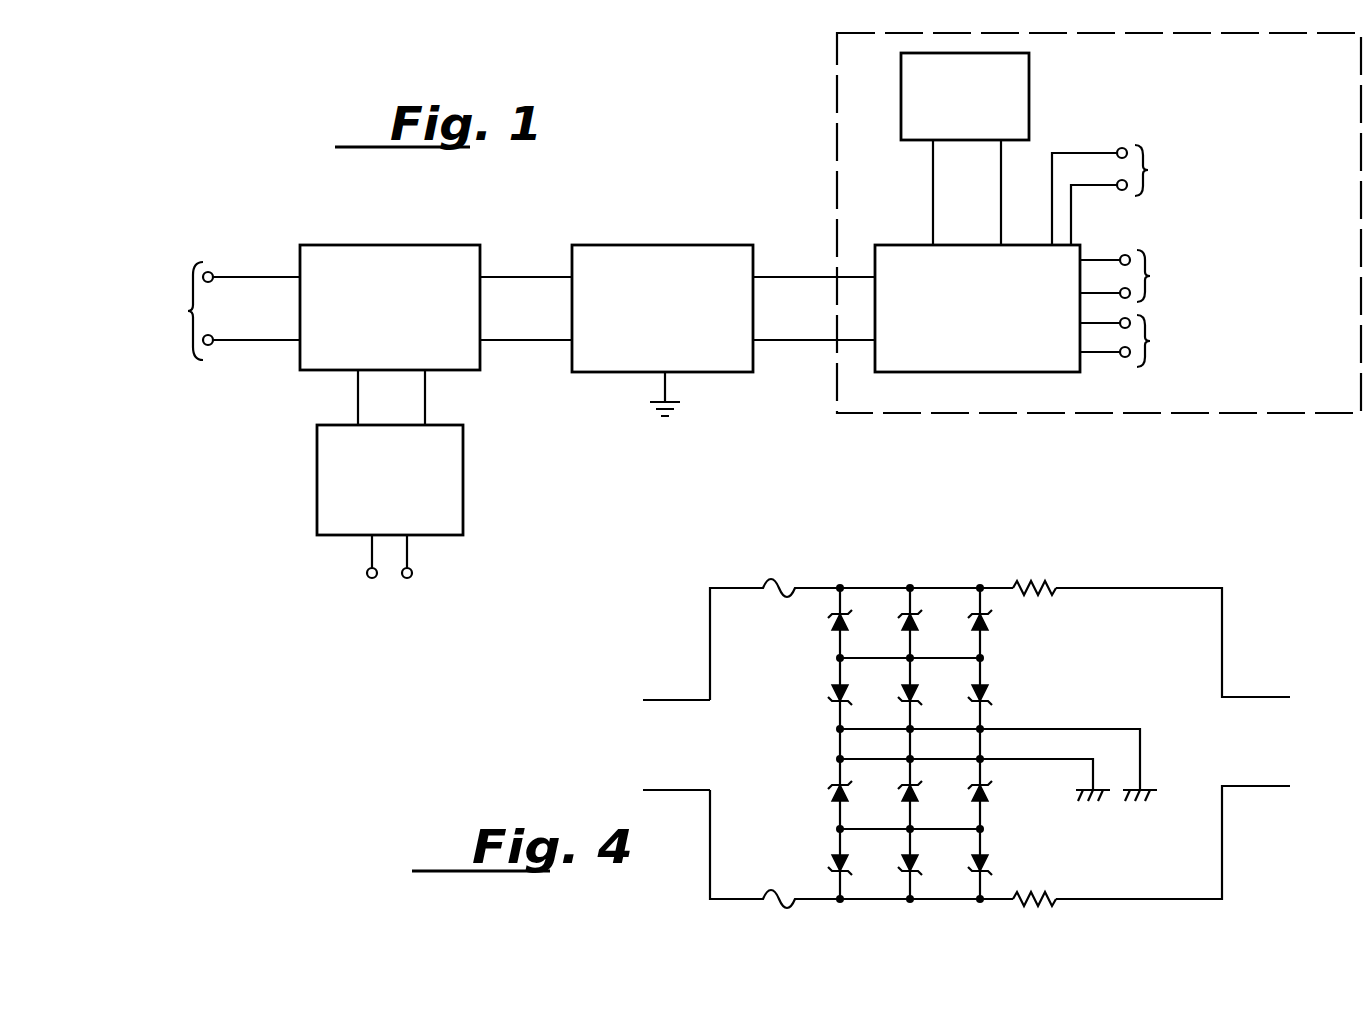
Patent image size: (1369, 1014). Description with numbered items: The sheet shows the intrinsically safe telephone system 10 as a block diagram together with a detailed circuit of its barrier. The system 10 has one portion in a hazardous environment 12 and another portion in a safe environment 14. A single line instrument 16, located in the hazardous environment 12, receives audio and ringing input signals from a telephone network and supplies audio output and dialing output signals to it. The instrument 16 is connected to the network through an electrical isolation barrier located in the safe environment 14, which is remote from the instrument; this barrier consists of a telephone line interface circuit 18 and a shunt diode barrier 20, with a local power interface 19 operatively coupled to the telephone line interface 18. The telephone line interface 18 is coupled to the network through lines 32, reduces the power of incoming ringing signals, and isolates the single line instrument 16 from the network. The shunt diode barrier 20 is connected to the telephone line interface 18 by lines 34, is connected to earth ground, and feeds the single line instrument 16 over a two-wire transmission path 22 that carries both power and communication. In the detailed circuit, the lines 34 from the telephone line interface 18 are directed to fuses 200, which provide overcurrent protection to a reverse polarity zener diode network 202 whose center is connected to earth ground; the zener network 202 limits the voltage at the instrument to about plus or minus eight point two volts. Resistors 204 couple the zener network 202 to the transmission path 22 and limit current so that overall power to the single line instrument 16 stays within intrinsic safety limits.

In FIG. 1, the intrinsically safe telephone system 10 is at (778, 134).
In FIG. 1, the hazardous environment 12 is at (1014, 424).
In FIG. 1, the safe environment 14 is at (551, 384).
In FIG. 1, the single line instrument 16 is at (1008, 362).
In FIG. 1, the telephone line interface circuit 18 is at (310, 370).
In FIG. 1, the local power interface 19 is at (327, 499).
In FIG. 1, the shunt diode barrier 20 is at (731, 362).
In FIG. 1, the transmission path 22 is at (806, 297).
In FIG. 4, the transmission path 22 is at (1278, 697).
In FIG. 1, the lines 32 is at (263, 300).
In FIG. 1, the lines 34 is at (536, 300).
In FIG. 4, the lines 34 is at (695, 702).
In FIG. 4, the fuses 200 is at (782, 582).
In FIG. 4, the reverse polarity zener diode network 202 is at (970, 572).
In FIG. 4, the resistors 204 is at (1043, 590).